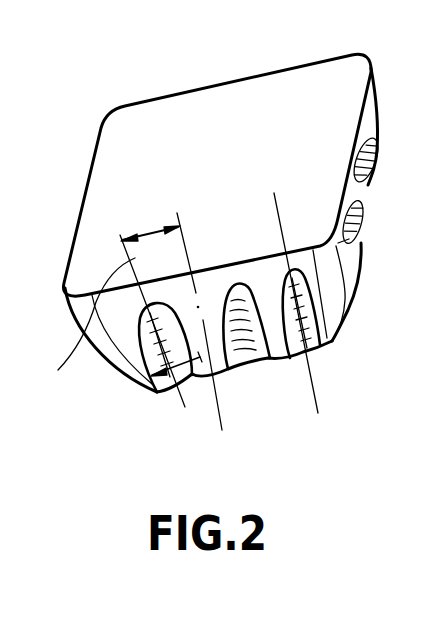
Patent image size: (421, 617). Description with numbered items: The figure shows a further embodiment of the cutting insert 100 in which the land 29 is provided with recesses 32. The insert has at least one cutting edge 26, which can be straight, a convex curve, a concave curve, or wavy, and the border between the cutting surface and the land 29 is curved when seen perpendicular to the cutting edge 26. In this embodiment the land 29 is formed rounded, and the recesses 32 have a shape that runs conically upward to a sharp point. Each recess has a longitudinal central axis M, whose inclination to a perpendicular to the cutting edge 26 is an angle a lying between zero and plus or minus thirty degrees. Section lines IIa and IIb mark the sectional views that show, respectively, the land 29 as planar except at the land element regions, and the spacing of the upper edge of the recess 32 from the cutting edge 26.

The cutting insert 100 is at (124, 97).
The cutting edge 26 is at (82, 201).
The recesses 32 is at (150, 380).
The land 29 is at (196, 375).
The longitudinal central axis M is at (79, 324).
The angle α a is at (147, 230).
The section line IIa is at (177, 228).
The section line IIb is at (312, 197).